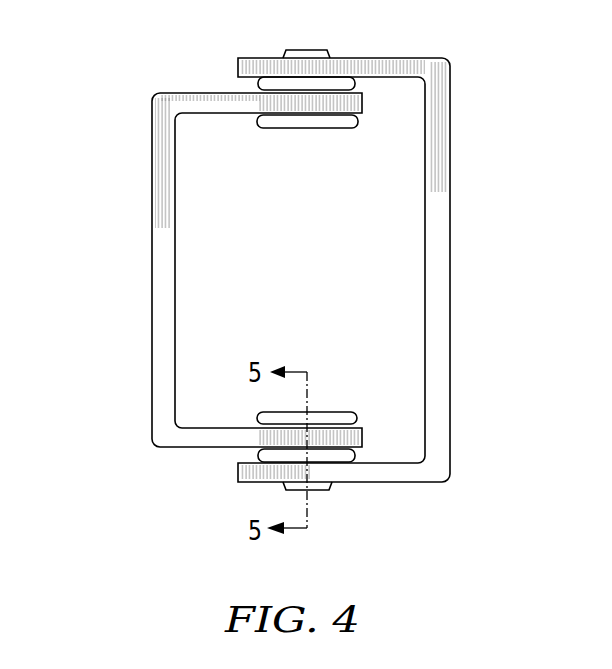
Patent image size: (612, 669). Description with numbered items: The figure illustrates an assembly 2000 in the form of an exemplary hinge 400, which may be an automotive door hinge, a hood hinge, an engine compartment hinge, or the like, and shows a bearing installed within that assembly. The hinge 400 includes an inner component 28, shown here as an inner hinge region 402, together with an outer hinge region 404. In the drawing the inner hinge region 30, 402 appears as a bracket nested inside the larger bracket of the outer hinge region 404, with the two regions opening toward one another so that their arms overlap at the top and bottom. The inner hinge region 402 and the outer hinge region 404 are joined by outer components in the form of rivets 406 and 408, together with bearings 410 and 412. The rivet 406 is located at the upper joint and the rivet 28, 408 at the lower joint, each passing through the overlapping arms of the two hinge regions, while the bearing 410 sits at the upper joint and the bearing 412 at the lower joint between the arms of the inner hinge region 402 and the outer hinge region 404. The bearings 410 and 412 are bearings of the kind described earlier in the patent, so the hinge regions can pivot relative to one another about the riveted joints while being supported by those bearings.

The assembly 2000 is at (469, 31).
The hinge 400 is at (469, 123).
The outer hinge region 404 is at (450, 247).
The inner bracket 30 is at (206, 270).
The inner hinge region 402 is at (152, 188).
The rivet 406 is at (303, 50).
The inner component 28 is at (237, 502).
The rivet 408 is at (282, 487).
The bearing 410 is at (258, 85).
The bearing 412 is at (258, 452).